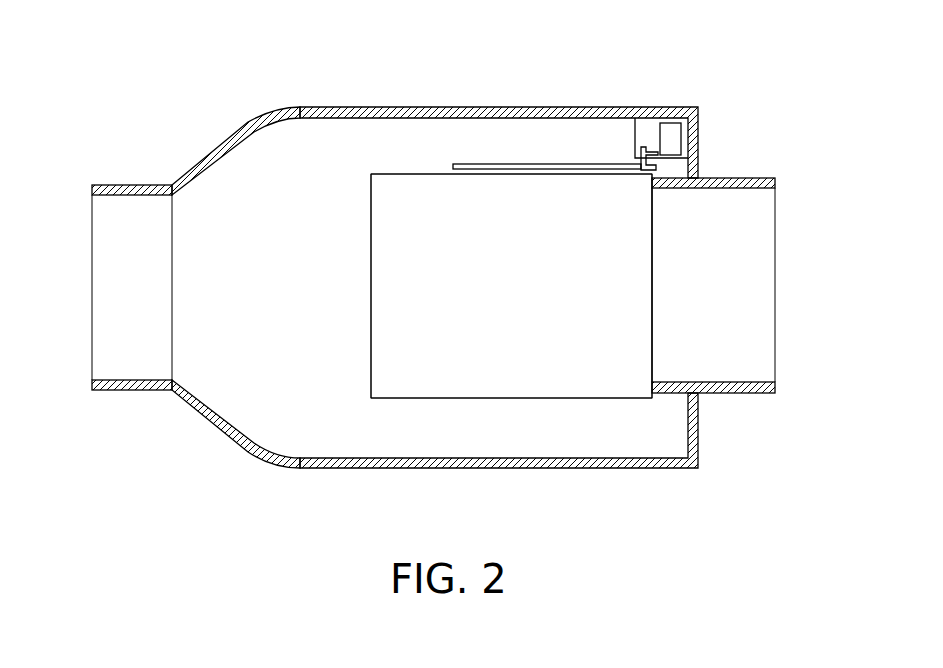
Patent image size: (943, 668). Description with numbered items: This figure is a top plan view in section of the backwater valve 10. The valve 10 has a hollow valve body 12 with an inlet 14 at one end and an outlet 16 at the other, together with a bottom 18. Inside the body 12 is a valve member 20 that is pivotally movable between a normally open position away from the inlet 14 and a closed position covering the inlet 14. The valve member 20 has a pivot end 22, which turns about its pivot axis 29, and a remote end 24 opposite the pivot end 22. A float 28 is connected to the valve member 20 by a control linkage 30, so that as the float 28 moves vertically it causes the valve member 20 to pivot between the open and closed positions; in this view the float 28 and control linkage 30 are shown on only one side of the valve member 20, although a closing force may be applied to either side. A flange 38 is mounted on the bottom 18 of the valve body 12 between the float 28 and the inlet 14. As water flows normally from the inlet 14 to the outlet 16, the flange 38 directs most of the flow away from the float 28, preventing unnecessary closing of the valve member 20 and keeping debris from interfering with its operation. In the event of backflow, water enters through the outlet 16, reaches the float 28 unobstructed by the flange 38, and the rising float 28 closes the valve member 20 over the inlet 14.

The backwater valve 10 is at (162, 102).
The valve body 12 is at (440, 105).
The inlet 14 is at (772, 215).
The outlet 16 is at (103, 250).
The bottom 18 is at (300, 125).
The valve member 20 is at (572, 213).
The pivot end 22 is at (642, 225).
The remote end 24 is at (371, 256).
The float 28 is at (690, 138).
The pivot axis 29 is at (645, 150).
The control linkage 30 is at (672, 153).
The flange 38 is at (453, 164).